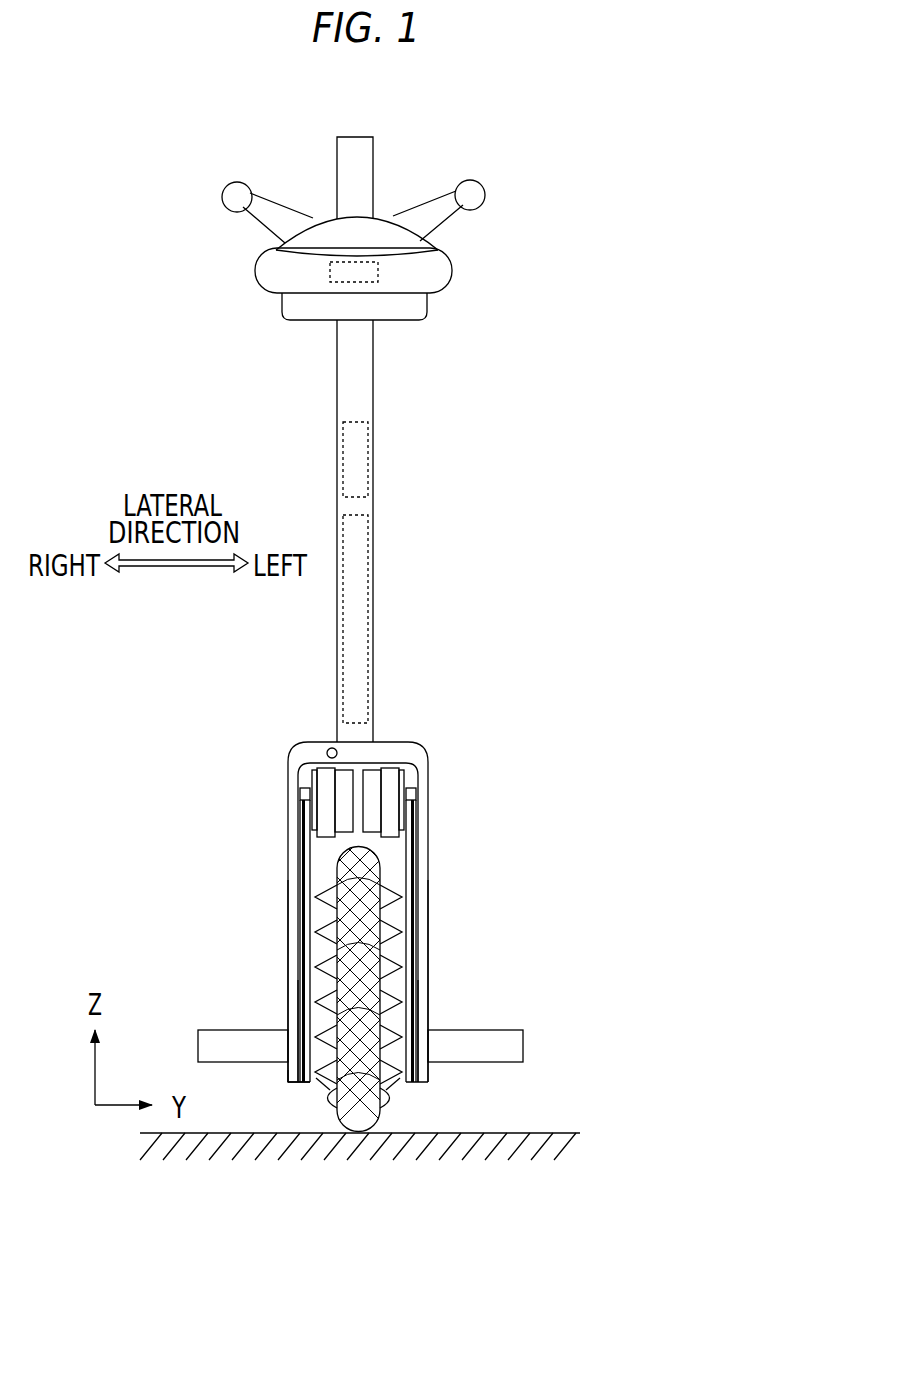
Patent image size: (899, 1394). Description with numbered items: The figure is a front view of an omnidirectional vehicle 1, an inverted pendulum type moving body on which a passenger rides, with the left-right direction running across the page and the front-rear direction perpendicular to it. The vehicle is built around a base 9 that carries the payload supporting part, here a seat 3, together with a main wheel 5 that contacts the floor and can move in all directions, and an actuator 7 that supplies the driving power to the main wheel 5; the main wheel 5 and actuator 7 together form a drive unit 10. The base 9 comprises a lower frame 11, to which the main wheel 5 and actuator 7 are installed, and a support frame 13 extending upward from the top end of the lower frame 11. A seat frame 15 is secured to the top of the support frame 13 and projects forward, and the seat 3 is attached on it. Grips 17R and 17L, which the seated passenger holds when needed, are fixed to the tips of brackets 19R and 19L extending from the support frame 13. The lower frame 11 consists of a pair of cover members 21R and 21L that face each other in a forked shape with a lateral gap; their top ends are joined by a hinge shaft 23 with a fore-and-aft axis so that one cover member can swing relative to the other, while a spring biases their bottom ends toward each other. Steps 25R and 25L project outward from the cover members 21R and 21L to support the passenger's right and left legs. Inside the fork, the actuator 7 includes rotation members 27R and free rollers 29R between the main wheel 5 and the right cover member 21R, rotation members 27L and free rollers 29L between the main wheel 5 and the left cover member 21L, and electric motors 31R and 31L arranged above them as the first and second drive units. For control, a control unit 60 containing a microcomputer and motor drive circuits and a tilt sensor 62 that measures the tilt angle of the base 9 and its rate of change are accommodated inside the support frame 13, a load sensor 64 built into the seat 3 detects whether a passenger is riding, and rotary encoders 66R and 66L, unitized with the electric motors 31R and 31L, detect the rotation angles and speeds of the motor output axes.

The omnidirectional vehicle 1 is at (530, 270).
The seat 3 is at (230, 280).
The main wheel 5 is at (381, 1124).
The actuator 7 is at (325, 1112).
The base 9 is at (442, 714).
The drive unit 10 is at (295, 1108).
The lower frame 11 is at (296, 734).
The support frame 13 is at (373, 508).
The seat frame 15 is at (400, 322).
The right grip 17R is at (230, 183).
The left grip 17L is at (482, 182).
The right bracket 19R is at (277, 225).
The left bracket 19L is at (433, 202).
The right cover member 21R is at (290, 890).
The left cover member 21L is at (426, 895).
The hinge shaft 23 is at (329, 746).
The right step 25R is at (217, 1029).
The left step 25L is at (492, 1029).
The right rotation members 27R is at (288, 1004).
The left rotation members 27L is at (410, 1007).
The right free rollers 29R is at (327, 1100).
The left free rollers 29L is at (400, 1100).
The right electric motor 31R is at (340, 780).
The left electric motor 31L is at (374, 785).
The control unit 60 is at (369, 570).
The tilt sensor 62 is at (369, 445).
The load sensor 64 is at (378, 272).
The right rotary encoder 66R is at (308, 825).
The left rotary encoder 66L is at (408, 825).